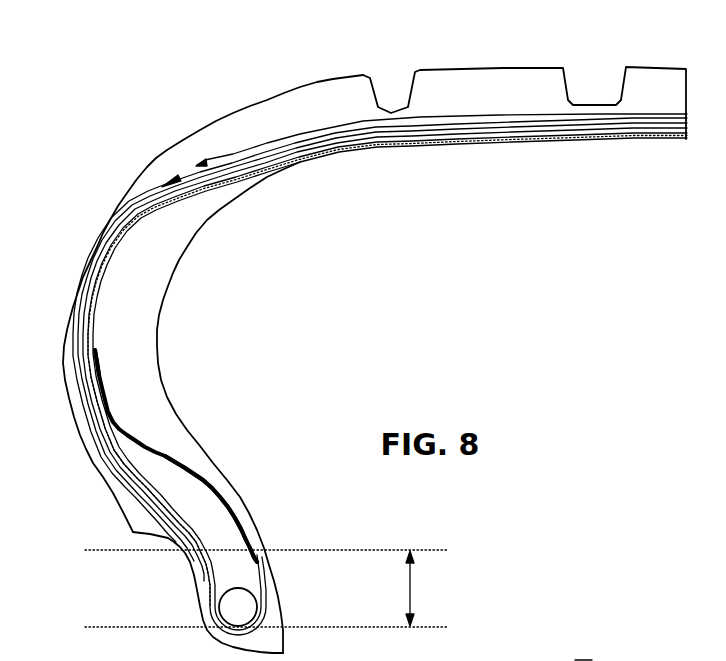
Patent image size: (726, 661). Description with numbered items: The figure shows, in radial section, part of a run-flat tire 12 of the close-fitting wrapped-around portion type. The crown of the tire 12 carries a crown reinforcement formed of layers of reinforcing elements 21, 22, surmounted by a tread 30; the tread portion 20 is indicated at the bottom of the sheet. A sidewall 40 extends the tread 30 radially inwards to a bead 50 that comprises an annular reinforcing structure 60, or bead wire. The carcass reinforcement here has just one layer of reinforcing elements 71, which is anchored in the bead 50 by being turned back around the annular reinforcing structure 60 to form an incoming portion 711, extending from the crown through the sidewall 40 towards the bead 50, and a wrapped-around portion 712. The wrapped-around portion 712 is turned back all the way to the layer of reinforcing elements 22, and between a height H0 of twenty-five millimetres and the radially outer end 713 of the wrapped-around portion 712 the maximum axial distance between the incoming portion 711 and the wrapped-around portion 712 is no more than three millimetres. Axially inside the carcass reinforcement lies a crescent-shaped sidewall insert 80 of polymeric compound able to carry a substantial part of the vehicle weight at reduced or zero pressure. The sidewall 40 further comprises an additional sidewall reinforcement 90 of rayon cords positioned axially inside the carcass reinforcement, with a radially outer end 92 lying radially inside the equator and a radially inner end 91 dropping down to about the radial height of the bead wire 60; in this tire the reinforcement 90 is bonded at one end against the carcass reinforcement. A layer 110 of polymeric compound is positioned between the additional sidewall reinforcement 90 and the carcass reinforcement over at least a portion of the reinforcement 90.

The run-flat tire 12 is at (160, 80).
The tread portion 20 is at (582, 657).
The layer of reinforcing elements 21 is at (260, 140).
The layer of reinforcing elements 22 is at (181, 173).
The tread 30 is at (480, 92).
The sidewall 40 is at (63, 330).
The bead 50 is at (275, 632).
The annular reinforcing structure 60 is at (215, 623).
The layer of reinforcing elements 71 is at (93, 312).
The incoming portion 711 is at (127, 482).
The wrapped-around portion 712 is at (130, 210).
The radially outer end 713 is at (200, 197).
The sidewall insert 80 is at (150, 268).
The additional sidewall reinforcement 90 is at (190, 462).
The radially inner end 91 is at (270, 567).
The radially outer end 92 is at (107, 343).
The layer of polymeric compound 110 is at (195, 507).
The height H0 is at (266, 588).